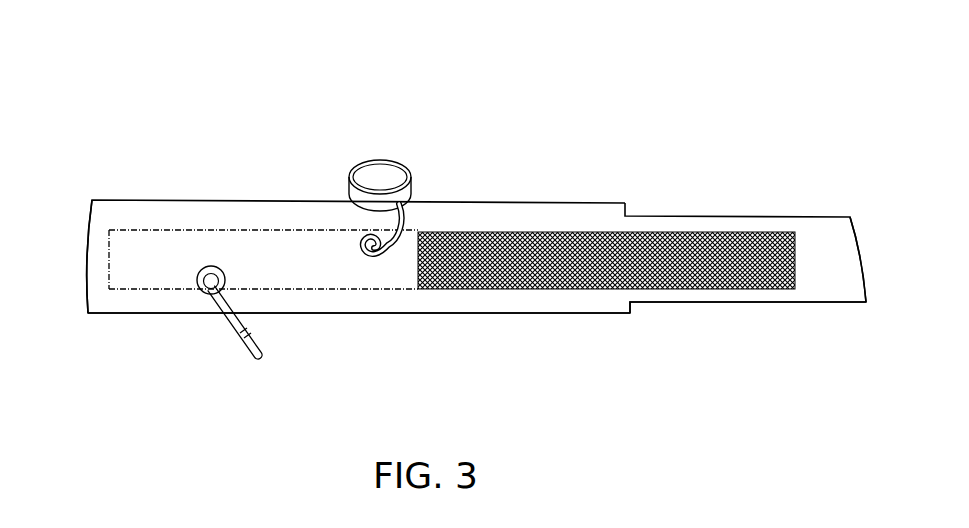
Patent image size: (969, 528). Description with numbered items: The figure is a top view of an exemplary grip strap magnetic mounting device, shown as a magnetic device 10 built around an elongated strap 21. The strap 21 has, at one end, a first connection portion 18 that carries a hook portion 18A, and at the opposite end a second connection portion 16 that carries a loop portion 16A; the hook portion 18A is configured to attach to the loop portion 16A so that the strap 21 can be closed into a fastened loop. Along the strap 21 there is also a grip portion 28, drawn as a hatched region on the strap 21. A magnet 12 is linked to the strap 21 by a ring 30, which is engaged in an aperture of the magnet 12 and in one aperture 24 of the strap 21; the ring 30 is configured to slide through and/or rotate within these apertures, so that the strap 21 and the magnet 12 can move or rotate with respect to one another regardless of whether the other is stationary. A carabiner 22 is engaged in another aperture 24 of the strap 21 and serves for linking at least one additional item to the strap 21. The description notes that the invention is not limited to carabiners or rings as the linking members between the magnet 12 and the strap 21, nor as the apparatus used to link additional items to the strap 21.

The magnetic device 10 is at (475, 211).
The magnet 12 is at (389, 180).
The second connection portion 16 is at (148, 215).
The loop portion 16A is at (108, 298).
The first connection portion 18 is at (802, 233).
The hook portion 18A is at (843, 285).
The strap 21 is at (548, 322).
The carabiner 22 is at (257, 350).
The aperture 24 is at (200, 290).
The grip portion 28 is at (659, 287).
The ring 30 is at (400, 224).